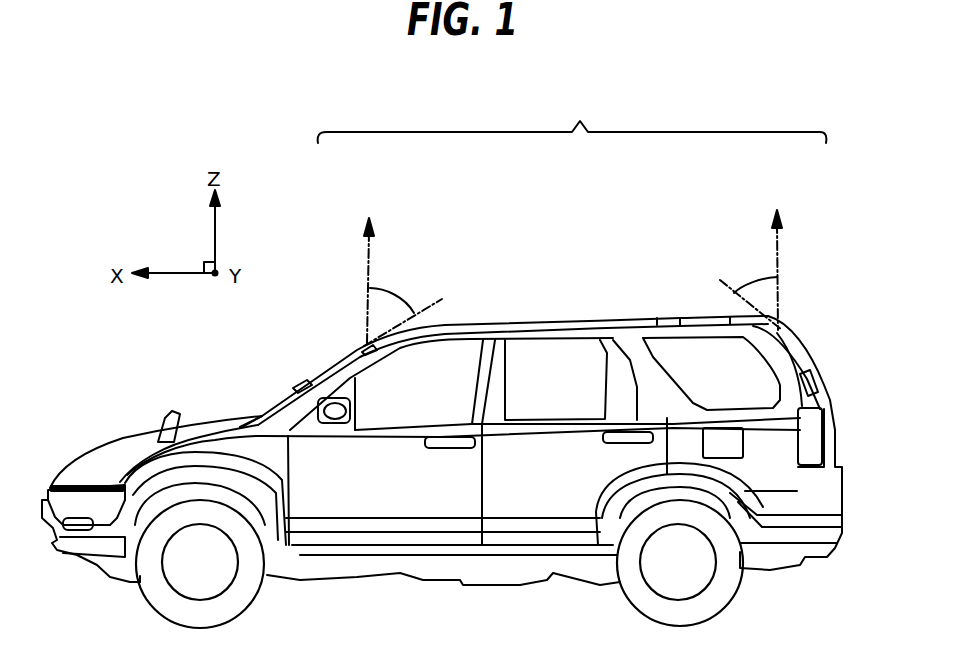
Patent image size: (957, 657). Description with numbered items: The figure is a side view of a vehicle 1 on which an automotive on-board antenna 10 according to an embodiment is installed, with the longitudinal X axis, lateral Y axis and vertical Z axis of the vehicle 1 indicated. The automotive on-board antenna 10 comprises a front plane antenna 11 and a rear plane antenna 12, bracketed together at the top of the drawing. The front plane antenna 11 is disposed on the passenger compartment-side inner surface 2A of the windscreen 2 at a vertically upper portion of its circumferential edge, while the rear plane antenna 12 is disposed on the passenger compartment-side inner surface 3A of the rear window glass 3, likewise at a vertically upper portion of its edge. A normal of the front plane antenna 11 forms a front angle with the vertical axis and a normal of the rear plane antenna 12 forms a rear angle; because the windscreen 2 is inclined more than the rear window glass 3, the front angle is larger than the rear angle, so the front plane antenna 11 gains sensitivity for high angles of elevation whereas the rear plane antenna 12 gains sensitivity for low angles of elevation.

The vehicle 1 is at (158, 386).
The windscreen 2 is at (317, 373).
The passenger compartment-side inner surface of the windscreen 2A is at (290, 390).
The rear window glass 3 is at (806, 365).
The passenger compartment-side inner surface of the rear window glass 3A is at (826, 376).
The automotive on-board antenna 10 is at (572, 117).
The front plane antenna 11 is at (365, 348).
The rear plane antenna 12 is at (790, 330).